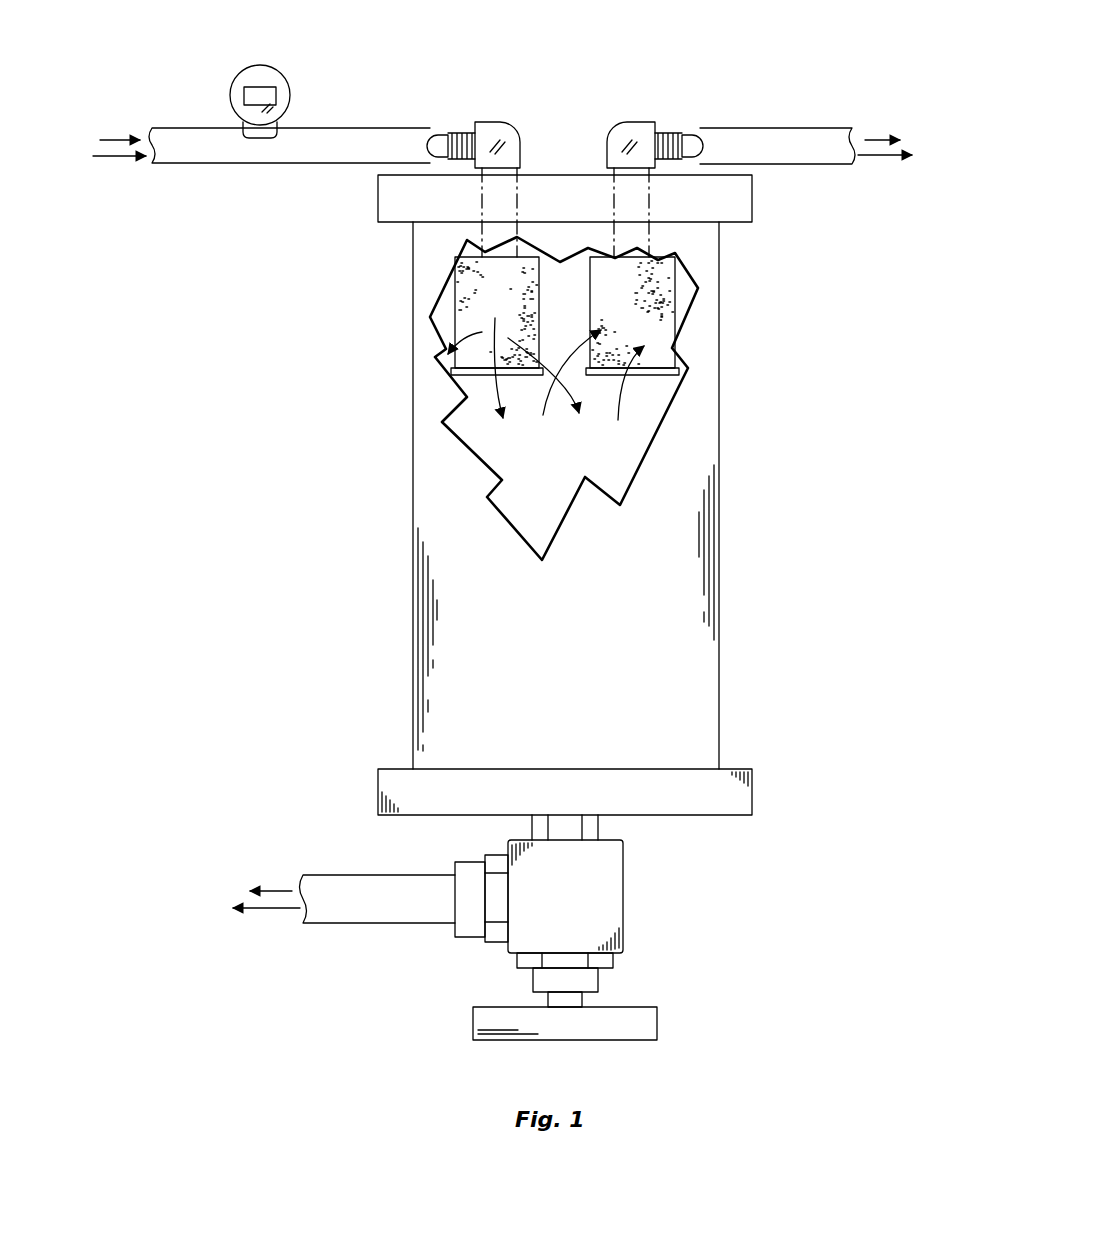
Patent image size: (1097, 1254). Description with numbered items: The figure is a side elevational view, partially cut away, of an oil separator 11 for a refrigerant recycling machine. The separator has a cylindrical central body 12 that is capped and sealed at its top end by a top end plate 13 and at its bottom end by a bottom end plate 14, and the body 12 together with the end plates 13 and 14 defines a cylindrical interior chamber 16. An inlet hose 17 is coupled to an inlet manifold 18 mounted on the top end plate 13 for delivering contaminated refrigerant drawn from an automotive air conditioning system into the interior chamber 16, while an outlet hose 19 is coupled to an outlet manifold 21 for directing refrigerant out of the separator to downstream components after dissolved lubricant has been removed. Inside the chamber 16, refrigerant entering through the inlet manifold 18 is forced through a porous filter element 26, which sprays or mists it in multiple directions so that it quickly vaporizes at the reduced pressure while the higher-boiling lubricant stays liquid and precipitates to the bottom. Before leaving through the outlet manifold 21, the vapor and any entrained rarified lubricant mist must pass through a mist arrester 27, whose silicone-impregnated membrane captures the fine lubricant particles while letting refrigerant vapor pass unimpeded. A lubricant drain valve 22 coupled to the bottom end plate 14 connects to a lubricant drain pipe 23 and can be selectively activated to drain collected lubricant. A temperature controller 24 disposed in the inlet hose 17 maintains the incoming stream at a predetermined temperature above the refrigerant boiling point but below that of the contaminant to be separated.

The separator 11 is at (202, 452).
The cylindrical central body 12 is at (465, 592).
The top end plate 13 is at (560, 175).
The bottom end plate 14 is at (752, 792).
The interior chamber 16 is at (571, 477).
The inlet hose 17 is at (236, 155).
The inlet manifold 18 is at (495, 128).
The outlet hose 19 is at (768, 135).
The outlet manifold 21 is at (632, 128).
The lubricant drain valve 22 is at (605, 917).
The drain pipe 23 is at (392, 915).
The temperature controller 24 is at (300, 70).
The porous filter element 26 is at (478, 302).
The mist arrester 27 is at (660, 295).